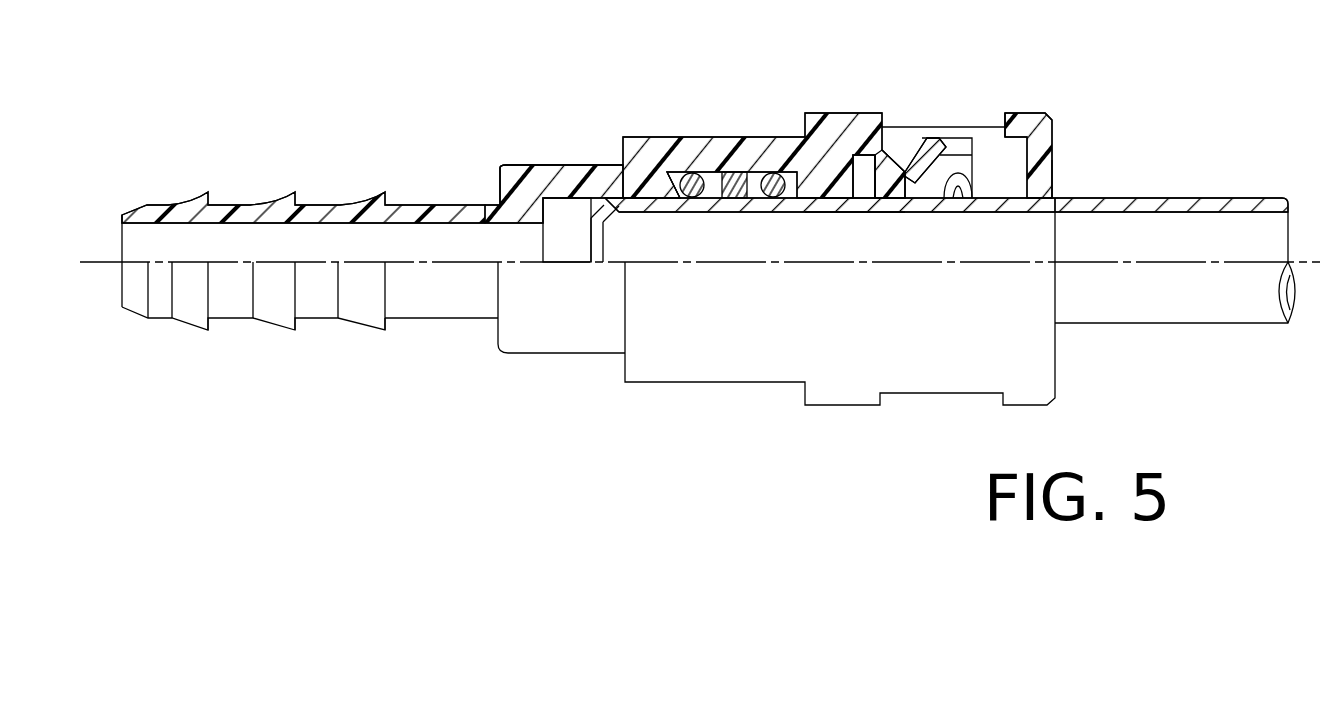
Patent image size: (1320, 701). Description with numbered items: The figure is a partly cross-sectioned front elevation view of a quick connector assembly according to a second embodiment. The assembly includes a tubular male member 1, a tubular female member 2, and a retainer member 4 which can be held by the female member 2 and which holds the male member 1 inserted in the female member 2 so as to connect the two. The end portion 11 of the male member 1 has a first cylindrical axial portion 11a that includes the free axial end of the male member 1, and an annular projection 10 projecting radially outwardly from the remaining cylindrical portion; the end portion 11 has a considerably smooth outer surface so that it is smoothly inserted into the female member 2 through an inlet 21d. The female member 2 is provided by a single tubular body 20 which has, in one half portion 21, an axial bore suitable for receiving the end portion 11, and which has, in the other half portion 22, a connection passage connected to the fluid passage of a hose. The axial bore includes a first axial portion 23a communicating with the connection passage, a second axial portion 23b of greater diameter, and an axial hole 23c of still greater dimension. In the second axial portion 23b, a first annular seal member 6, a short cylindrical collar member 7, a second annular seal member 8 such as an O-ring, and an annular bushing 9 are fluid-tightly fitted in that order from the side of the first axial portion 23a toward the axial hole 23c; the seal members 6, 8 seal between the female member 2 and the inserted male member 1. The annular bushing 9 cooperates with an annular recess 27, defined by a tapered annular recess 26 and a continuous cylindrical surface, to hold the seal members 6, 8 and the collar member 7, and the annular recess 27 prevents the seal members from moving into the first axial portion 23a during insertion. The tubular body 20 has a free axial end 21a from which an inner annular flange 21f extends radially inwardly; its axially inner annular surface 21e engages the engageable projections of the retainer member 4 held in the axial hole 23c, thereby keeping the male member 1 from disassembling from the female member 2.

The tubular male member 1 is at (1278, 178).
The tubular female member 2 is at (550, 392).
The retainer member 4 is at (914, 124).
The first annular seal member 6 is at (737, 176).
The collar member 7 is at (737, 200).
The second annular seal member 8 is at (775, 176).
The annular bushing 9 is at (852, 178).
The annular projection 10 is at (958, 190).
The end portion 11 is at (997, 232).
The first cylindrical axial portion 11a is at (822, 212).
The tubular body 20 is at (503, 168).
The first half portion 21 is at (552, 156).
The free axial end 21a is at (1012, 113).
The inlet 21d is at (1055, 177).
The inner annular surface 21e is at (1026, 150).
The inner annular flange 21f is at (1028, 155).
The other half portion 22 is at (408, 334).
The first axial portion 23a is at (568, 242).
The second axial portion 23b is at (763, 207).
The axial hole 23c is at (862, 188).
The tapered annular recess 26 is at (692, 200).
The annular recess 27 is at (693, 175).